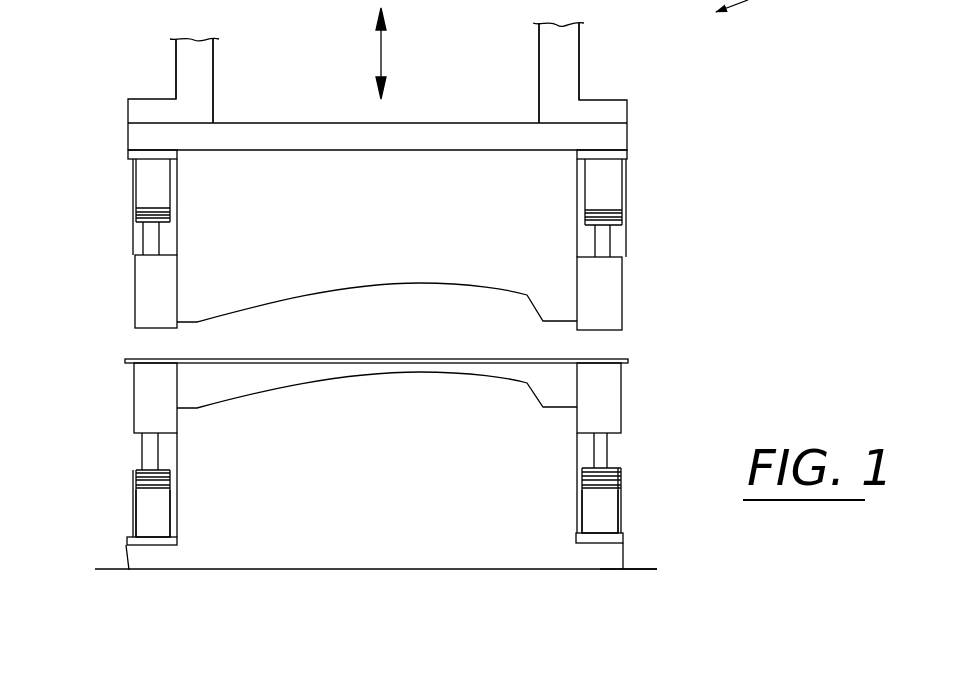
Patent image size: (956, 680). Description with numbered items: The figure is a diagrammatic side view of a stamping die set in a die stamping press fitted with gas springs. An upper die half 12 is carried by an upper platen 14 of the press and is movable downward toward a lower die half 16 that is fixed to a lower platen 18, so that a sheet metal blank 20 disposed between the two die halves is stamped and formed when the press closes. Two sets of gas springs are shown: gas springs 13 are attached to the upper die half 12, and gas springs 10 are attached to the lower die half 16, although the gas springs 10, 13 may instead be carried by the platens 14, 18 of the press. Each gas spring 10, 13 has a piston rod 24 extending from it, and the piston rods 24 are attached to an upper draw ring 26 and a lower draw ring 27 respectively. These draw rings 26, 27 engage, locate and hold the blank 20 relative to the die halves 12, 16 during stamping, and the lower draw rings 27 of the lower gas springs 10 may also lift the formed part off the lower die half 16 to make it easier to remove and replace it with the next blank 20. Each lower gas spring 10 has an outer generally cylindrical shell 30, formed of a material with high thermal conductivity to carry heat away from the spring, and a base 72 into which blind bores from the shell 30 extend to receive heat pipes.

The gas spring 10 is at (121, 496).
The upper die half 12 is at (449, 140).
The gas spring 13 is at (121, 184).
The upper platen 14 is at (570, 63).
The lower die half 16 is at (515, 558).
The lower platen 18 is at (647, 568).
The sheet metal blank 20 is at (585, 350).
The piston rod 24 is at (147, 240).
The upper draw ring 26 is at (613, 285).
The lower draw ring 27 is at (612, 398).
The outer shell 30 is at (160, 505).
The base 72 is at (140, 542).